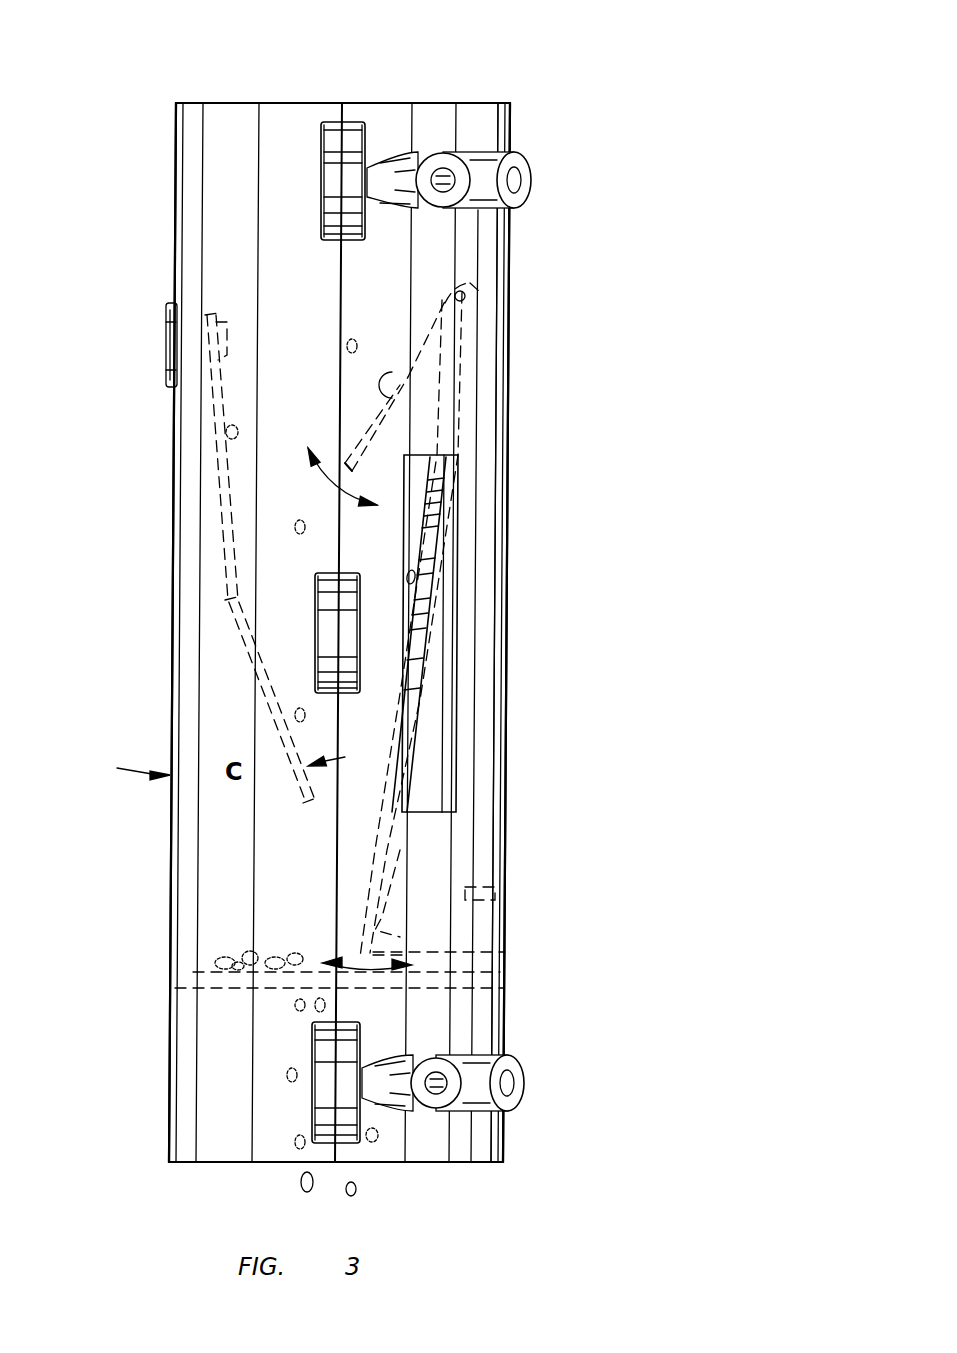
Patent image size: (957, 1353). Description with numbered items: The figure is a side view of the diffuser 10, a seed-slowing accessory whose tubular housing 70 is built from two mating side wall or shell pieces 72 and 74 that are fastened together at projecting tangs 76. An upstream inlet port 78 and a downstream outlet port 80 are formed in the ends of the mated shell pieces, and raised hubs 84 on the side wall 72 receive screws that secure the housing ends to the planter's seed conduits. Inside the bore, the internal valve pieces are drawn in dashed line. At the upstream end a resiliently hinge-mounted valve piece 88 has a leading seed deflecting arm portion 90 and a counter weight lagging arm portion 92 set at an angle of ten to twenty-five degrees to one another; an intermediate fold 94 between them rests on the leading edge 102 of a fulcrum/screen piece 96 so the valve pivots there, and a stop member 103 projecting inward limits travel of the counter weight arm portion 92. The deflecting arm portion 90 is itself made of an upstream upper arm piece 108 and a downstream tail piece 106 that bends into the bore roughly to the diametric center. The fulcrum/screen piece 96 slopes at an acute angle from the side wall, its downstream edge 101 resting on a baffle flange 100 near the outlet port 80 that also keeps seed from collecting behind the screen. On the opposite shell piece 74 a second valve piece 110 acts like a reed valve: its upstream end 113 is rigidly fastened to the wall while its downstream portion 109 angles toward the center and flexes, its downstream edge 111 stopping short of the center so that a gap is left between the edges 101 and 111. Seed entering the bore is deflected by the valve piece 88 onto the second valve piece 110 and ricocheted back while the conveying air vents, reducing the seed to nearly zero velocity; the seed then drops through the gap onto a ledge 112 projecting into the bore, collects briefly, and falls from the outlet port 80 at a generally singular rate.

The diffuser 10 is at (522, 501).
The tubular housing 70 is at (158, 263).
The side wall piece 72 is at (507, 438).
The side wall piece 74 is at (173, 707).
The tangs 76 is at (332, 132).
The inlet port 78 is at (305, 102).
The outlet port 80 is at (290, 1163).
The raised hubs 84 is at (453, 152).
The valve piece 88 is at (488, 326).
The leading seed deflecting arm portion 90 is at (400, 372).
The counter weight lagging arm portion 92 is at (460, 400).
The intermediate fold 94 is at (470, 300).
The fulcrum/screen piece 96 is at (400, 937).
The baffle flange 100 is at (478, 948).
The downstream edge of fulcrum/screen piece 101 is at (360, 955).
The leading edge of fulcrum/screen piece 102 is at (470, 283).
The stop member 103 is at (495, 885).
The tail piece 106 is at (372, 422).
The upper arm piece 108 is at (437, 305).
The downstream portion of second valve piece 109 is at (243, 618).
The second valve piece 110 is at (215, 547).
The downstream edge of second valve piece 111 is at (226, 791).
The ledge 112 is at (187, 967).
The upstream end of second valve piece 113 is at (215, 367).